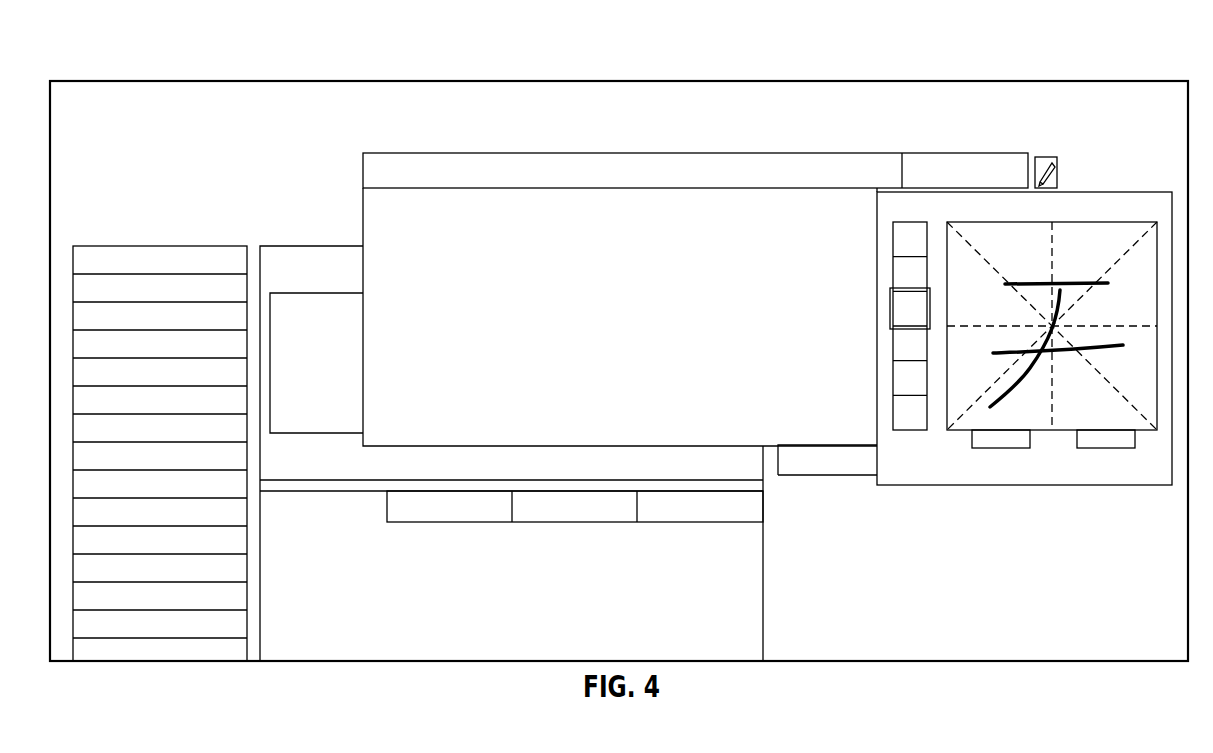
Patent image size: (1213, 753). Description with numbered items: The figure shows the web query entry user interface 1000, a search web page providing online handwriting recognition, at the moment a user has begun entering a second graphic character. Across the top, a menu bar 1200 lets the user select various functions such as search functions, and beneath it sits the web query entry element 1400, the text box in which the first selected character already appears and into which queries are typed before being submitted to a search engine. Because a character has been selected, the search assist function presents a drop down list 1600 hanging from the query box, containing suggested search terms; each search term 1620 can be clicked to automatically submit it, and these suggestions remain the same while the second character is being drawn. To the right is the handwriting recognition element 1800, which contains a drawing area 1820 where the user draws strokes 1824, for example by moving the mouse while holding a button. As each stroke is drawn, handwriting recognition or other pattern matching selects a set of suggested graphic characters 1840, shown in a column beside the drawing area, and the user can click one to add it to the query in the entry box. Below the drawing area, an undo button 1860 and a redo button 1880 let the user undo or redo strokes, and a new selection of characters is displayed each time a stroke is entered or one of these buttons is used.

The web query entry user interface 1000 is at (1078, 40).
The menu bar 1200 is at (900, 133).
The web query entry element 1400 is at (363, 172).
The drop down list 1600 is at (365, 402).
The search term 1620 is at (600, 277).
The handwriting recognition element 1800 is at (907, 485).
The drawing area 1820 is at (947, 413).
The strokes 1824 is at (1077, 262).
The suggested graphic characters 1840 is at (913, 225).
The undo button 1860 is at (998, 448).
The redo button 1880 is at (1105, 448).